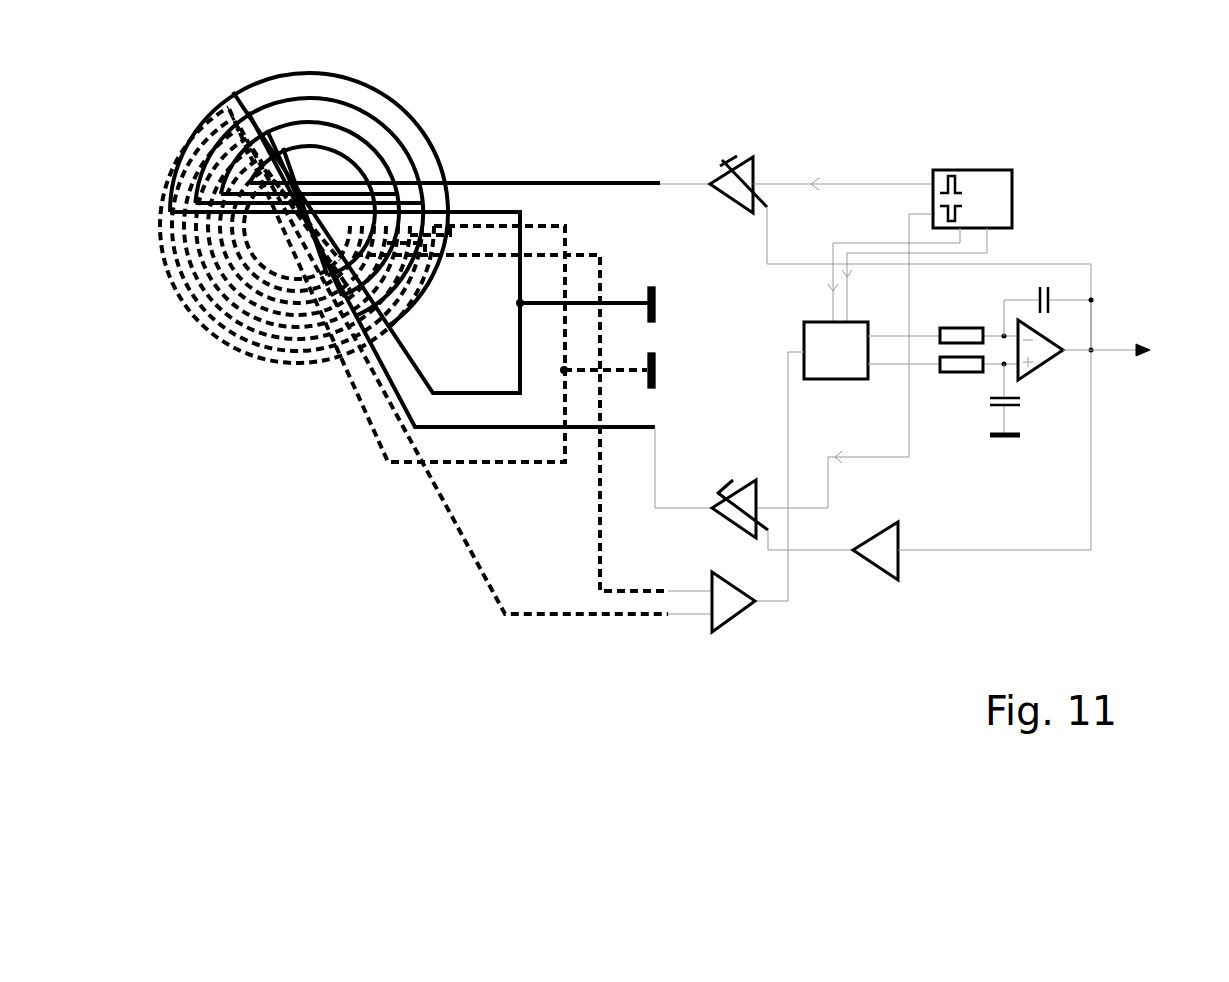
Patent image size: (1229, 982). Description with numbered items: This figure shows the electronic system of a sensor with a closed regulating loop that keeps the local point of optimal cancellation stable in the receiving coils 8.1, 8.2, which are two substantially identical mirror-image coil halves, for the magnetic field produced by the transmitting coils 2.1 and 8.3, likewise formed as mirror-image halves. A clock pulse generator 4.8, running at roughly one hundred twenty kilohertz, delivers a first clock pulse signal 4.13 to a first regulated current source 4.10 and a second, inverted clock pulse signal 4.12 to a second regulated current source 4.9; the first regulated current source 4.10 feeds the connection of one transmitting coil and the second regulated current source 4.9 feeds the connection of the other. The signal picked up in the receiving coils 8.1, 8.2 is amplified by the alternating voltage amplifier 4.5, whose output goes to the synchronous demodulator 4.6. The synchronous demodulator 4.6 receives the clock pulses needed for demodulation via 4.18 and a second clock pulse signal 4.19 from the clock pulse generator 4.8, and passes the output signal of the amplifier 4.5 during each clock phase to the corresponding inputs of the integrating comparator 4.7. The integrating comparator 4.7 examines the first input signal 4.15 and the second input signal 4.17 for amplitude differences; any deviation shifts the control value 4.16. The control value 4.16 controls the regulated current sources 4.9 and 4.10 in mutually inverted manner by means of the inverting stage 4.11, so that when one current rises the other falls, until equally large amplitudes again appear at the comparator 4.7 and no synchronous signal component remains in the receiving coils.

The transmitting coil 2.1 is at (419, 124).
The receiving coil 8.1 is at (185, 308).
The receiving coil 8.2 is at (435, 298).
The transmitting coil 8.3 is at (442, 164).
The alternating voltage amplifier 4.5 is at (735, 622).
The synchronous demodulator 4.6 is at (811, 461).
The integrating comparator 4.7 is at (1045, 368).
The clock pulse generator 4.8 is at (992, 178).
The second regulated current source 4.9 is at (722, 178).
The first regulated current source 4.10 is at (728, 510).
The inverting stage 4.11 is at (898, 540).
The second inverted clock pulse signal 4.12 is at (870, 184).
The first clock pulse signal 4.13 is at (845, 455).
The first input signal 4.15 is at (920, 330).
The control value 4.16 is at (1137, 367).
The second input signal 4.17 is at (916, 367).
The first clock pulse signal (demodulator) 4.18 is at (832, 256).
The second clock pulse signal 4.19 is at (987, 253).